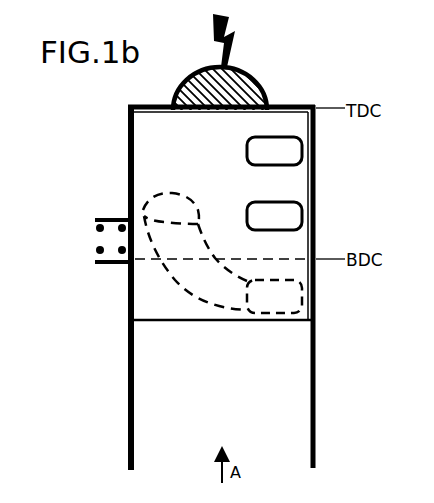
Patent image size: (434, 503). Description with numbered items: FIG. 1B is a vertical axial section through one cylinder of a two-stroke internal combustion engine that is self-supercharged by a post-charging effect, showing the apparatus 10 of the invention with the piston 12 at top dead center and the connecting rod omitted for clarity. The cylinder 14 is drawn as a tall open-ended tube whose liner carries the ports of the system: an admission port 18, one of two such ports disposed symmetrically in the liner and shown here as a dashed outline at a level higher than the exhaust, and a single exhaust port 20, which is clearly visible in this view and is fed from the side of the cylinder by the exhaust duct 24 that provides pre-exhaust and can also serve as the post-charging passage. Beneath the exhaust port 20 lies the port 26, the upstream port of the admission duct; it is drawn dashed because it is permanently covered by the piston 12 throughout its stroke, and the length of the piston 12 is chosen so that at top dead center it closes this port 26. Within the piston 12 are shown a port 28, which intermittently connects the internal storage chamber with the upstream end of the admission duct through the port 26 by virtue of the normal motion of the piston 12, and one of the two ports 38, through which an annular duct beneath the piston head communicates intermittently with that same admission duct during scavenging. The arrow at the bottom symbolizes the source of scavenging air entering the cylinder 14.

The apparatus 10 is at (325, 283).
The piston 12 is at (288, 123).
The cylinder 14 is at (316, 388).
The admission port 18 is at (178, 200).
The exhaust port 20 is at (127, 240).
The exhaust duct 24 is at (112, 265).
The port 26 is at (278, 307).
The port 28 is at (288, 218).
The ports 38 is at (288, 152).